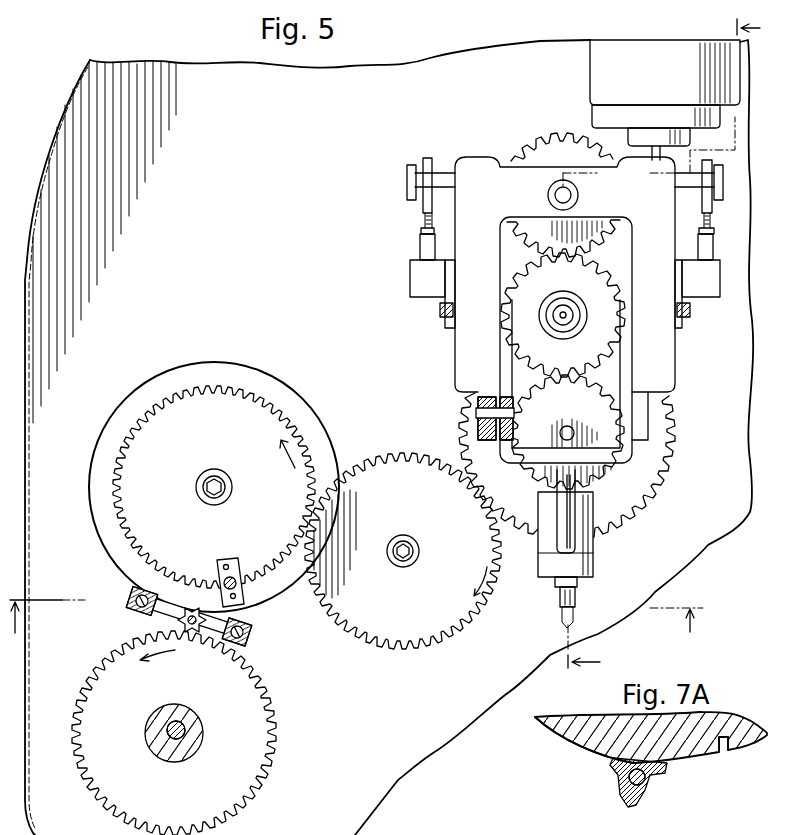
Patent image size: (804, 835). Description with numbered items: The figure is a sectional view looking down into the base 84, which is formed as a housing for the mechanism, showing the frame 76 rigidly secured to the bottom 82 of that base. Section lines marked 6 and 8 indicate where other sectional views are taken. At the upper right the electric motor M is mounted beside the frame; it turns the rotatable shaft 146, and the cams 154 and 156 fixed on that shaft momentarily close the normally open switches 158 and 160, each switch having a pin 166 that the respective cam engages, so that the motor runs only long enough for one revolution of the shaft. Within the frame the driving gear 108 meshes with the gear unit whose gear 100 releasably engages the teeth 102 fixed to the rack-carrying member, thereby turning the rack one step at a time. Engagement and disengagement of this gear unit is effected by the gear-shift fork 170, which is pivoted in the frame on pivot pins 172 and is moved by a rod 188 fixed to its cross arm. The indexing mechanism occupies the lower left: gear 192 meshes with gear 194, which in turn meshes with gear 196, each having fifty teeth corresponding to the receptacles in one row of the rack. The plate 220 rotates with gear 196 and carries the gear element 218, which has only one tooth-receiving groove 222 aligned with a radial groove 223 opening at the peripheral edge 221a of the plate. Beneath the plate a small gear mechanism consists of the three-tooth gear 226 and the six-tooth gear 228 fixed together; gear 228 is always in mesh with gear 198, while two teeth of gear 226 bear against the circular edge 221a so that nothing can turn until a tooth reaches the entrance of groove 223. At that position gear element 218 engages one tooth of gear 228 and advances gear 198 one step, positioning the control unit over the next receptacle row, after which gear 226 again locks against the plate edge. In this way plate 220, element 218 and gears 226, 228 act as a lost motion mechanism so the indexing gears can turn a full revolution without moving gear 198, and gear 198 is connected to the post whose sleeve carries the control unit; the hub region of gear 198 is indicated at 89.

In FIG. 5, the section line 6- 6 is at (355, 628).
In FIG. 5, the section line 8- 8 is at (670, 345).
In FIG. 5, the frame 76 is at (678, 364).
In FIG. 5, the bottom 82 is at (192, 89).
In FIG. 5, the base 84 is at (54, 123).
In FIG. 5, the shaft 89 is at (200, 741).
In FIG. 5, the gear 100 is at (517, 317).
In FIG. 5, the teeth 102 is at (628, 300).
In FIG. 5, the driving gear 108 is at (538, 150).
In FIG. 5, the rotatable shaft 146 is at (443, 178).
In FIG. 5, the cam 154 is at (422, 218).
In FIG. 5, the cam 156 is at (706, 212).
In FIG. 5, the switch 158 is at (408, 285).
In FIG. 5, the switch 160 is at (726, 284).
In FIG. 5, the pin 166 is at (422, 238).
In FIG. 5, the gear-shift fork 170 is at (638, 457).
In FIG. 5, the pivot pins 172 is at (478, 413).
In FIG. 5, the rod 188 is at (560, 530).
In FIG. 5, the gear 192 is at (663, 509).
In FIG. 5, the gear 194 is at (412, 626).
In FIG. 5, the gear 196 is at (253, 392).
In FIG. 5, the gear member 198 is at (246, 726).
In FIG. 5, the gear element 218 is at (245, 592).
In FIG. 5, the plate 220 is at (312, 408).
In FIG. 7A, the plate 220 is at (598, 730).
In FIG. 7A, the peripheral edge 221a is at (557, 731).
In FIG. 5, the tooth-receiving groove 222 is at (250, 620).
In FIG. 7A, the radial groove 223 is at (724, 750).
In FIG. 7A, the gear 226 is at (650, 796).
In FIG. 5, the gear 228 is at (178, 619).
In FIG. 5, the electric motor M is at (590, 60).